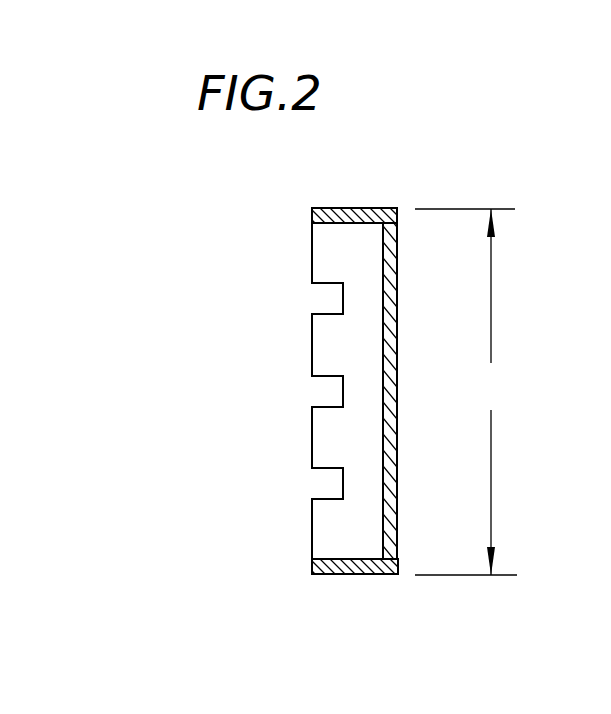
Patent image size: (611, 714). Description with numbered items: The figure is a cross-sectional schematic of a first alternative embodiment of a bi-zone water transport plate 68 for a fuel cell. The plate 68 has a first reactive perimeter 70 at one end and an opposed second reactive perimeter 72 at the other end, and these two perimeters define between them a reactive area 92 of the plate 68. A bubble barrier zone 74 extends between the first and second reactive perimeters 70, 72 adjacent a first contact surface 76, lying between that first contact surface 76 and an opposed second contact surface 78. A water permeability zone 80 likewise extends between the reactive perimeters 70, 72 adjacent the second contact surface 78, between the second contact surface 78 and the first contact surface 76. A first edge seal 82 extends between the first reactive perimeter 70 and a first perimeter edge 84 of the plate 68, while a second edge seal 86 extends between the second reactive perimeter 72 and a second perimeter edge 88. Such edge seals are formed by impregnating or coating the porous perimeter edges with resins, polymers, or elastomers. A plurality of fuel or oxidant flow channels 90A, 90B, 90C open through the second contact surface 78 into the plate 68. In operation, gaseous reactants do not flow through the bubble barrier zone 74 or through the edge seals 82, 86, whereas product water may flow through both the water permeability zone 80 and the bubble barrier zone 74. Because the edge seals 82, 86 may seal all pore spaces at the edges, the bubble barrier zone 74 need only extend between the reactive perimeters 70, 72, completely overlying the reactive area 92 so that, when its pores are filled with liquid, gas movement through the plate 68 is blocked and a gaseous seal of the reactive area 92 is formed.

The bi-zone water transport plate 68 is at (438, 197).
The first reactive perimeter 70 is at (392, 236).
The second reactive perimeter 72 is at (388, 548).
The bubble barrier zone 74 is at (390, 333).
The first contact surface 76 is at (397, 432).
The second contact surface 78 is at (312, 350).
The water permeability zone 80 is at (342, 438).
The first edge seal 82 is at (323, 212).
The first perimeter edge 84 is at (363, 209).
The second edge seal 86 is at (345, 570).
The second perimeter edge 88 is at (384, 575).
The fuel or oxidant flow channel 90A is at (308, 301).
The fuel or oxidant flow channel 90B is at (308, 394).
The fuel or oxidant flow channel 90C is at (308, 486).
The reactive area 92 is at (505, 402).